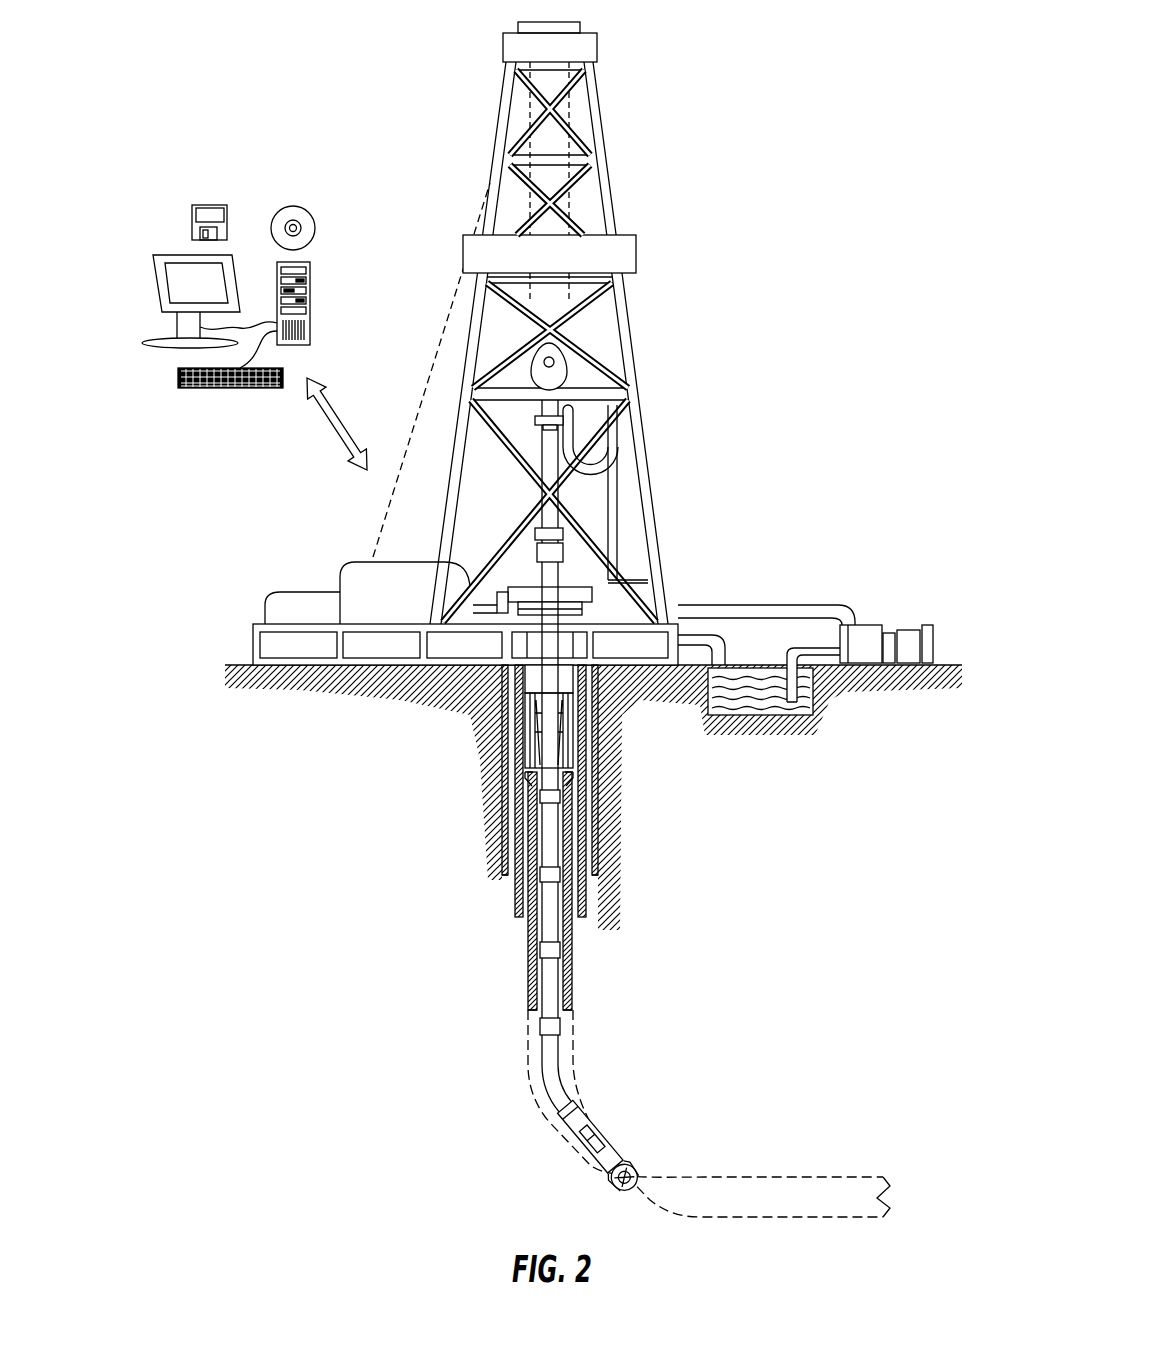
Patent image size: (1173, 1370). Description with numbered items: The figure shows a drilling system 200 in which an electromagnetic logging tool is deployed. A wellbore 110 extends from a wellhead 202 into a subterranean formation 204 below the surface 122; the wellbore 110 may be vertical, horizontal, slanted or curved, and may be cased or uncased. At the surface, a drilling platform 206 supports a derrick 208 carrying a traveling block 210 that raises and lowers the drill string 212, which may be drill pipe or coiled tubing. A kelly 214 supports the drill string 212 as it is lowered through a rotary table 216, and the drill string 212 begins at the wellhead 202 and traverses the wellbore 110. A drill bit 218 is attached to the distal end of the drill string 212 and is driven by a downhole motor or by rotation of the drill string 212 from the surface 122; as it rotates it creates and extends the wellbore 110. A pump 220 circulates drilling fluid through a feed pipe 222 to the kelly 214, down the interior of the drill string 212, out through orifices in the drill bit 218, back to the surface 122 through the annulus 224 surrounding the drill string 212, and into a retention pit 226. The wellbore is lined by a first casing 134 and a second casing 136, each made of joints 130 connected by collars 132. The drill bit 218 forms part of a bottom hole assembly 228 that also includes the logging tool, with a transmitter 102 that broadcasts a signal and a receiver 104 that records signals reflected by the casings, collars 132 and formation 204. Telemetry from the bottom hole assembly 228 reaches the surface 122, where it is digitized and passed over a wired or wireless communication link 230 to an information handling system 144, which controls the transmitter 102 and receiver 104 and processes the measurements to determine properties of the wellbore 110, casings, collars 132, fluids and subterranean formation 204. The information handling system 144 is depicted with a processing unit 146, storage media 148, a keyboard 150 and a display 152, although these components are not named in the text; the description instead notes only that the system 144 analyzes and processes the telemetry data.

The drilling system 200 is at (871, 124).
The derrick 208 is at (613, 177).
The traveling block 210 is at (570, 365).
The kelly 214 is at (550, 448).
The rotary table 216 is at (585, 572).
The wellhead 202 is at (602, 608).
The feed pipe 222 is at (787, 605).
The pump 220 is at (866, 625).
The surface 122 is at (946, 665).
The drilling platform 206 is at (253, 647).
The retention pit 226 is at (755, 702).
The collars 132 is at (582, 790).
The joints 130 is at (582, 818).
The annulus 224 is at (537, 825).
The second casing 136 is at (598, 884).
The drill string 212 is at (546, 932).
The wellbore 110 is at (581, 924).
The first casing 134 is at (578, 1006).
The transmitter 102 is at (625, 1155).
The receiver 104 is at (590, 1140).
The drill bit 218 is at (655, 1168).
The bottom hole assembly 228 is at (553, 1133).
The subterranean formation 204 is at (799, 961).
The information handling system 144 is at (228, 299).
The storage media 148 is at (290, 206).
The display 152 is at (160, 290).
The processor unit 146 is at (310, 275).
The keyboard 150 is at (187, 392).
The communication link 230 is at (320, 430).